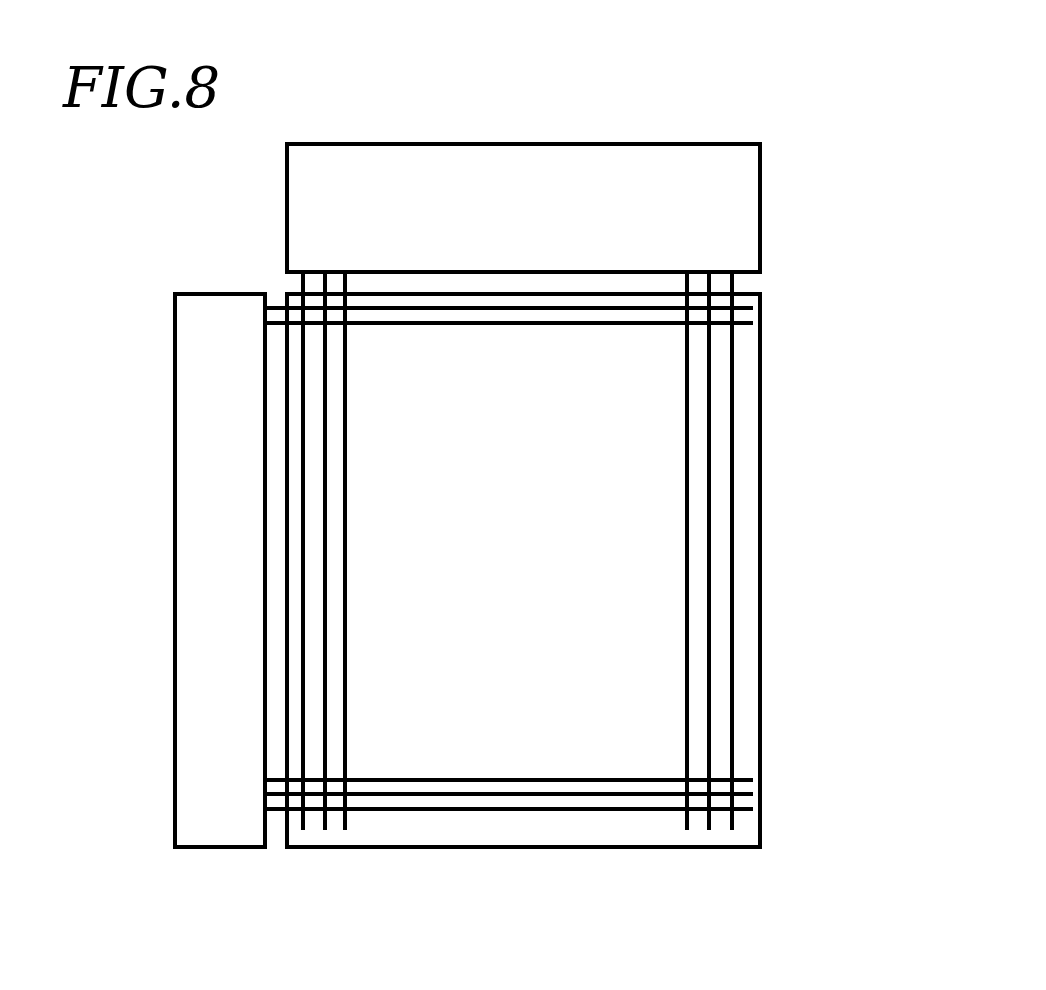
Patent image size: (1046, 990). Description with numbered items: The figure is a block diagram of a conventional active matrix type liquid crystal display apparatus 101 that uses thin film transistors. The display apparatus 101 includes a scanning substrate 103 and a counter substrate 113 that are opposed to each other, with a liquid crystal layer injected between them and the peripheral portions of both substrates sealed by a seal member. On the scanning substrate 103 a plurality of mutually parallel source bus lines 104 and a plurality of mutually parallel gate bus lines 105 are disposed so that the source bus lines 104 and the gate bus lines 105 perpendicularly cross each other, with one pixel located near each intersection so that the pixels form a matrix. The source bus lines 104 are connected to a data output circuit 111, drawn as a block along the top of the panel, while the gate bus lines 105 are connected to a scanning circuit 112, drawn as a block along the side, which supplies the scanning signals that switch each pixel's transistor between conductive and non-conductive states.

The display apparatus 101 is at (813, 475).
The scanning substrate 103 is at (760, 590).
The counter substrate 113 is at (848, 623).
The source bus lines 104 is at (750, 283).
The gate bus lines 105 is at (275, 830).
The data output circuit 111 is at (658, 168).
The scanning circuit 112 is at (207, 682).